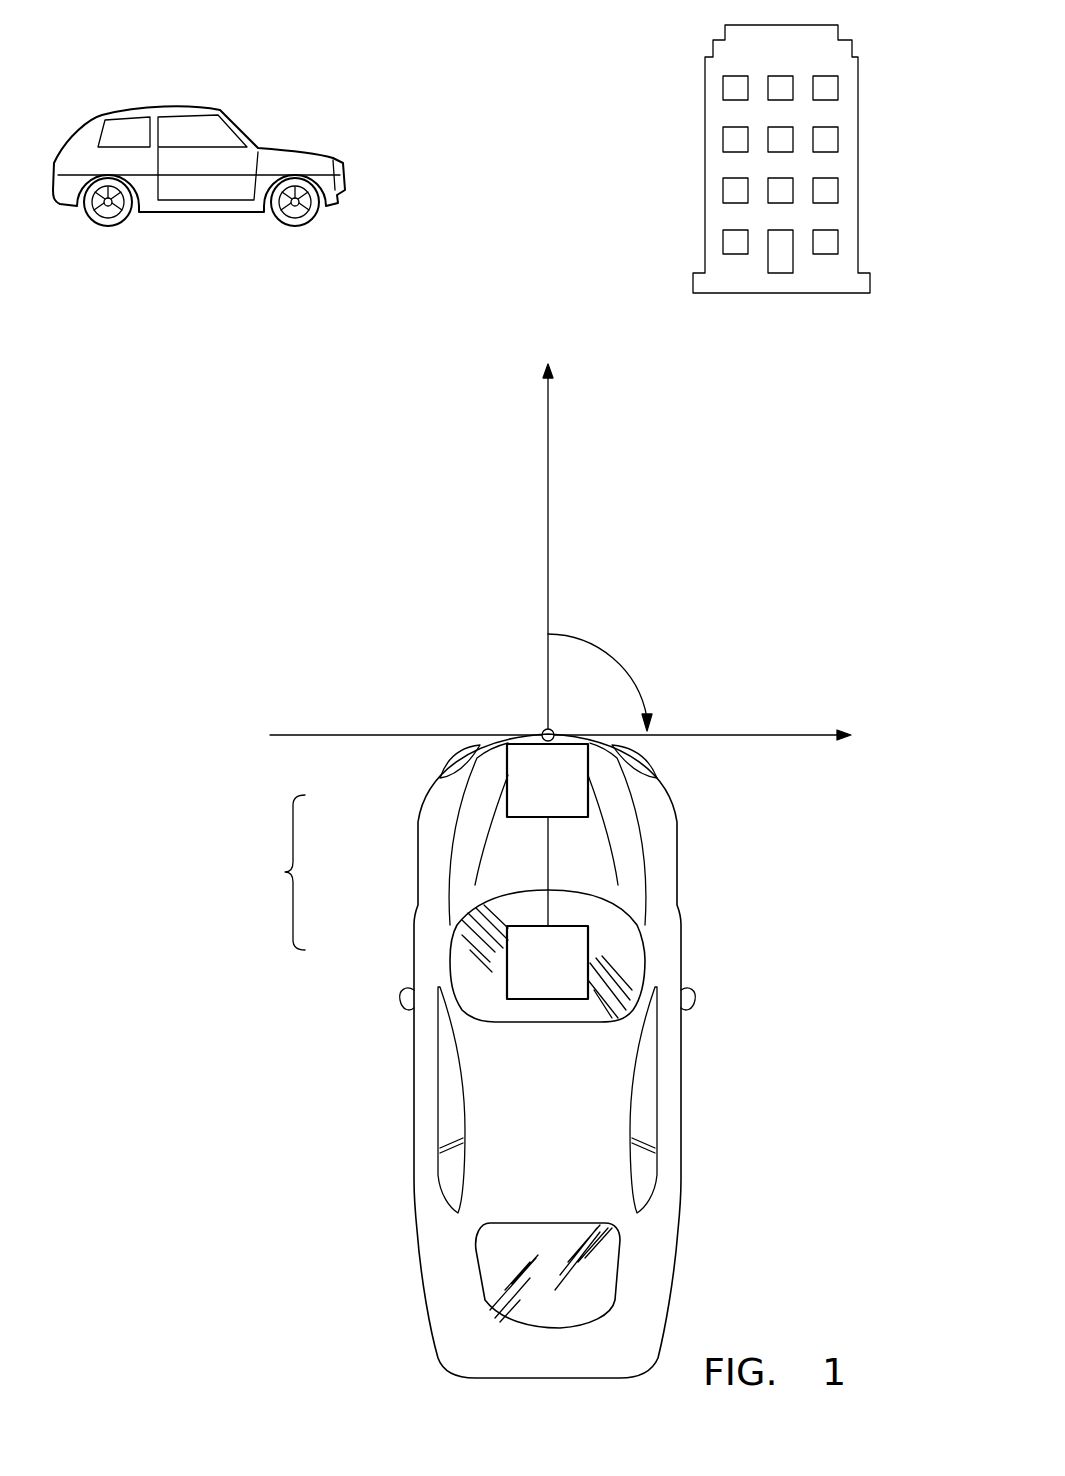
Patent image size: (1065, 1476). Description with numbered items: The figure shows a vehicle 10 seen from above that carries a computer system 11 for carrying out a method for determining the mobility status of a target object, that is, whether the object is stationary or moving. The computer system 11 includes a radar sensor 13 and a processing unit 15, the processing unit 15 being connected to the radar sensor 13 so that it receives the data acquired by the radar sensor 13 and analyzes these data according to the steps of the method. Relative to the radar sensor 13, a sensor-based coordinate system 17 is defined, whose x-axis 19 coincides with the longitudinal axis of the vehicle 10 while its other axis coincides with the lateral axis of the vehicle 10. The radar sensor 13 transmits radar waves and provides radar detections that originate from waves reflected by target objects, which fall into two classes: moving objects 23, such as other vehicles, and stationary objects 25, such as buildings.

The vehicle 10 is at (450, 1228).
The computer system 11 is at (285, 872).
The radar sensor 13 is at (513, 775).
The processing unit 15 is at (513, 968).
The sensor-based coordinate system 17 is at (655, 656).
The x-axis 19 is at (548, 400).
The moving objects 23 is at (288, 148).
The stationary objects 25 is at (858, 115).